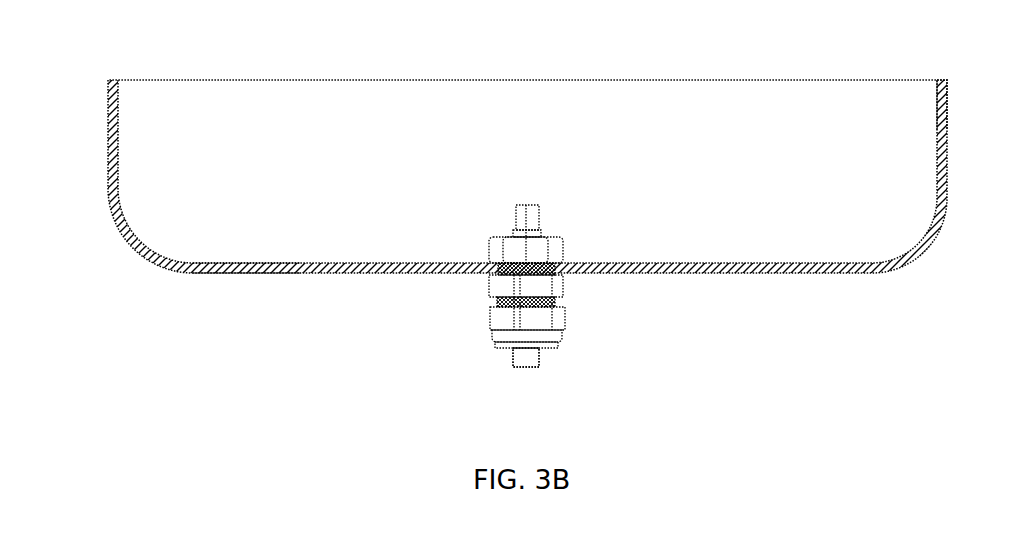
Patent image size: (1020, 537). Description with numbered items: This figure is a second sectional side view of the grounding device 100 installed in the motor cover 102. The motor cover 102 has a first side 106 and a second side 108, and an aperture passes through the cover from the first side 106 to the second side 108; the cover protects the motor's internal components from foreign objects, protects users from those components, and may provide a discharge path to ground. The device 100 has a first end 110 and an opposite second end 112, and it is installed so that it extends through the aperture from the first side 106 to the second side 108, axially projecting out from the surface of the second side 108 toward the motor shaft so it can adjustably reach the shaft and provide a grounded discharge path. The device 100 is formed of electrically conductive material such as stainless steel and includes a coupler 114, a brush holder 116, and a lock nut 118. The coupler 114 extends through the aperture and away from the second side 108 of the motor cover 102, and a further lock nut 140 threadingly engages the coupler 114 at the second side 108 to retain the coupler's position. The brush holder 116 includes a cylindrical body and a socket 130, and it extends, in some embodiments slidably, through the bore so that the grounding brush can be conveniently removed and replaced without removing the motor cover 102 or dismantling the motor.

The device 100 is at (509, 350).
The motor cover 102 is at (107, 97).
The first side 106 is at (237, 275).
The second side 108 is at (935, 100).
The first end 110 is at (532, 390).
The second end 112 is at (526, 190).
The coupler 114 is at (563, 280).
The brush holder 116 is at (540, 352).
The lock nut 118 is at (490, 312).
The socket 130 is at (516, 216).
The lock nut 140 is at (565, 242).